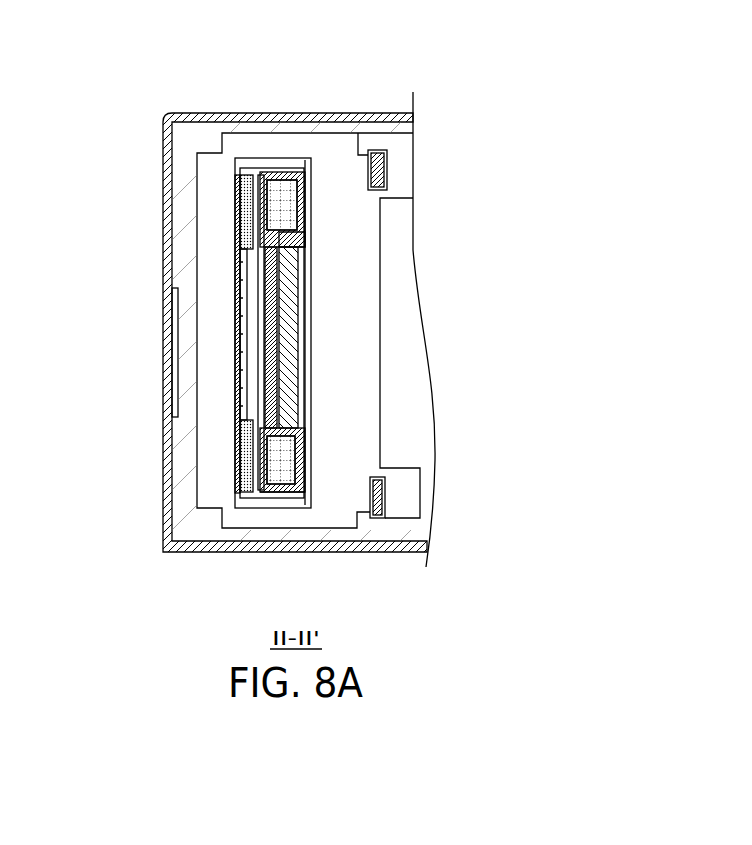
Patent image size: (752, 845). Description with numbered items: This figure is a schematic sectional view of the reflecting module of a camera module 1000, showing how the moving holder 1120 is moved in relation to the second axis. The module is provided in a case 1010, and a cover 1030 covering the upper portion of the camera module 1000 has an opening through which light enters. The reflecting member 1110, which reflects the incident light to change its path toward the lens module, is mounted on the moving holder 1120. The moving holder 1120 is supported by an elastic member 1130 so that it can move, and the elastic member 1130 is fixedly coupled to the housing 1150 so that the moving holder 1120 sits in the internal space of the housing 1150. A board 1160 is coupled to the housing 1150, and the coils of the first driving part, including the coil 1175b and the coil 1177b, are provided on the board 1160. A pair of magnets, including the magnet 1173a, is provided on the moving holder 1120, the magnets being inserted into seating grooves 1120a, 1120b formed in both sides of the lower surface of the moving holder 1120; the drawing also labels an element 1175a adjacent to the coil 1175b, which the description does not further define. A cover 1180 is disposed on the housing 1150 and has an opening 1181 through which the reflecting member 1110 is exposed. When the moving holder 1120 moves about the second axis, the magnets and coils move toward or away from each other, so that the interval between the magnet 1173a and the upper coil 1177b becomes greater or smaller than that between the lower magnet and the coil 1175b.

The camera module 1000 is at (332, 27).
The case 1010 is at (168, 160).
The cover 1030 is at (166, 146).
The reflecting member 1110 is at (288, 335).
The moving holder 1120 is at (265, 303).
The seating groove 1120a is at (283, 173).
The seating groove 1120b is at (283, 477).
The elastic member 1130 is at (260, 337).
The housing 1150 is at (247, 160).
The board 1160 is at (236, 190).
The magnet 1173a is at (240, 278).
The first damper 1175a is at (242, 440).
The coil 1175b is at (246, 212).
The coil 1177b is at (268, 470).
The cover 1180 is at (283, 185).
The opening 1181 is at (305, 296).